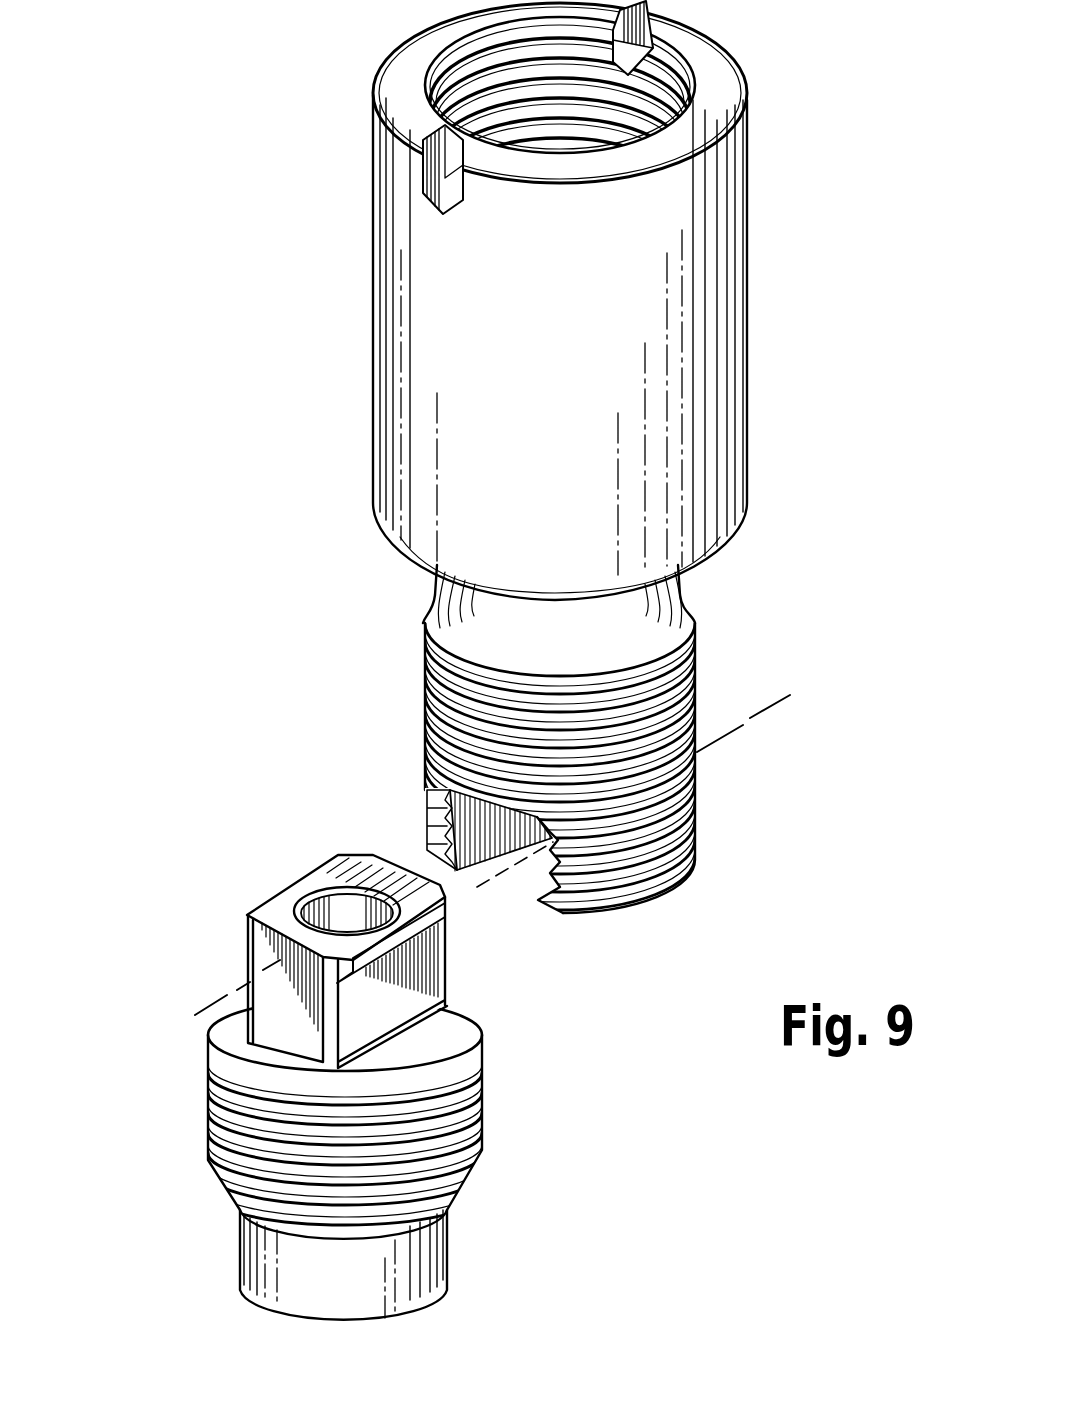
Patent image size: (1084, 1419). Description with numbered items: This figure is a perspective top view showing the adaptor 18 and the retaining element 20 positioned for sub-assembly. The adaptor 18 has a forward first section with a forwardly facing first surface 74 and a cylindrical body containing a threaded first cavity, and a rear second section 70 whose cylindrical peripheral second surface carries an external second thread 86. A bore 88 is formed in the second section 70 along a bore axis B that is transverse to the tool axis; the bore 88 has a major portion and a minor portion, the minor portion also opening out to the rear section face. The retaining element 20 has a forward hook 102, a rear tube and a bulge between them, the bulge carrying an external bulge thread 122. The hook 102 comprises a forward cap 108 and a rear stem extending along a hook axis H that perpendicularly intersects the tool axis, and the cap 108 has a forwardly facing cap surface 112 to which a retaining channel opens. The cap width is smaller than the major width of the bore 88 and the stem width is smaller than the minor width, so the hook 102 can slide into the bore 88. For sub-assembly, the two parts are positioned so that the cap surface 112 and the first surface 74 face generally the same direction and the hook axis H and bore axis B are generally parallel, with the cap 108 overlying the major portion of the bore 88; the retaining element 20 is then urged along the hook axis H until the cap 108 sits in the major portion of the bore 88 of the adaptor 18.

The adaptor 18 is at (247, 133).
The first surface 74 is at (413, 55).
The second section 70 is at (407, 692).
The second thread 86 is at (695, 802).
The bore 88 is at (427, 817).
The bore axis B is at (743, 723).
The retaining element 20 is at (593, 1265).
The bulge thread 122 is at (483, 1135).
The hook 102 is at (215, 923).
The cap surface 112 is at (277, 910).
The cap 108 is at (447, 923).
The hook axis H is at (215, 1003).